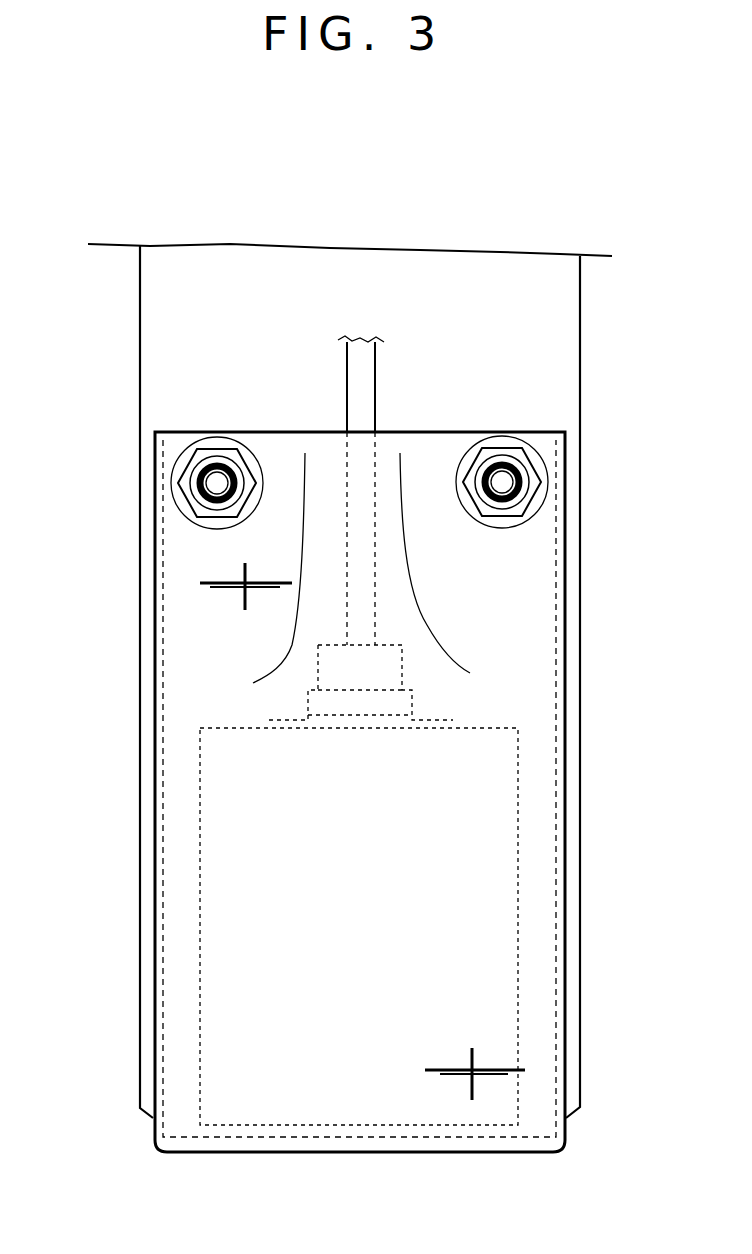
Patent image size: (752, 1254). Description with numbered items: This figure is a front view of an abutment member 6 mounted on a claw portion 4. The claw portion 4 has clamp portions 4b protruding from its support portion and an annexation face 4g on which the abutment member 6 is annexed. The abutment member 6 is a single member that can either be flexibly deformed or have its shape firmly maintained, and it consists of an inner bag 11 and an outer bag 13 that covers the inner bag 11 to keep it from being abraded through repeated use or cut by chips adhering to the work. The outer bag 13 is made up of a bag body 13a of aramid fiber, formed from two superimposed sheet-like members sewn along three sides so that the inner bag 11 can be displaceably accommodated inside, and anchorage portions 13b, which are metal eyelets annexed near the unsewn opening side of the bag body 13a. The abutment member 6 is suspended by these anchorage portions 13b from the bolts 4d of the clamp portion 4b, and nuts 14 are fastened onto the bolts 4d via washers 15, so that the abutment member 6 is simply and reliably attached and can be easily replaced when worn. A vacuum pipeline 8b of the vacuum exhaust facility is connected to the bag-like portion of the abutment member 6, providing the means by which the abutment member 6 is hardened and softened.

The claw portion 4 is at (97, 361).
The clamp portion 4b is at (140, 665).
The bolt 4d is at (255, 468).
The annexation face 4g is at (565, 408).
The abutment member 6 is at (478, 414).
The vacuum pipeline 8b is at (377, 385).
The inner bag 11 is at (243, 712).
The outer bag 13 is at (237, 412).
The bag body 13a is at (150, 779).
The anchorage portion 13b is at (240, 520).
The nut 14 is at (258, 488).
The washer 15 is at (220, 528).